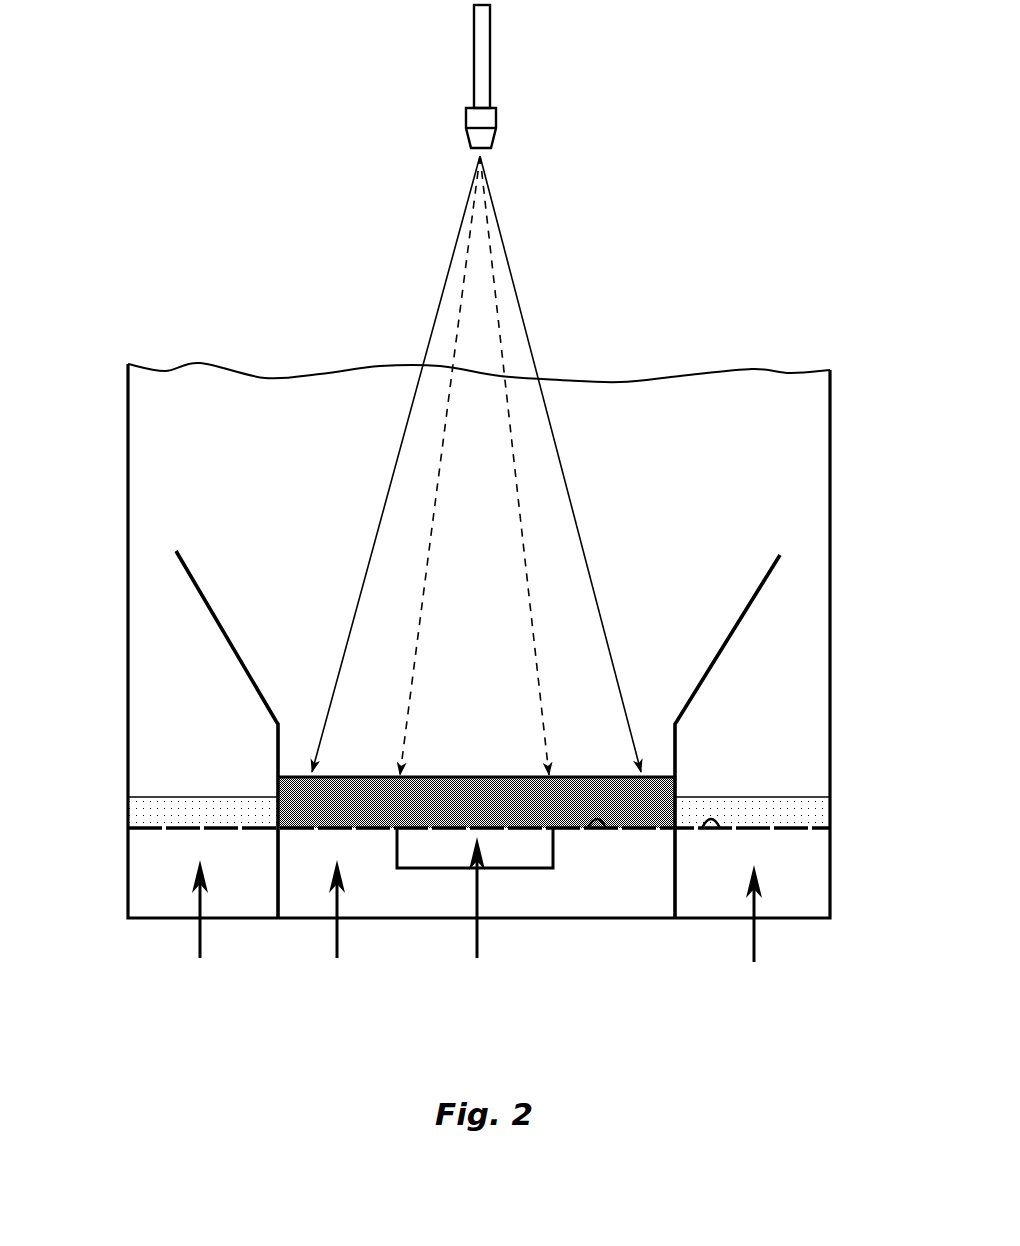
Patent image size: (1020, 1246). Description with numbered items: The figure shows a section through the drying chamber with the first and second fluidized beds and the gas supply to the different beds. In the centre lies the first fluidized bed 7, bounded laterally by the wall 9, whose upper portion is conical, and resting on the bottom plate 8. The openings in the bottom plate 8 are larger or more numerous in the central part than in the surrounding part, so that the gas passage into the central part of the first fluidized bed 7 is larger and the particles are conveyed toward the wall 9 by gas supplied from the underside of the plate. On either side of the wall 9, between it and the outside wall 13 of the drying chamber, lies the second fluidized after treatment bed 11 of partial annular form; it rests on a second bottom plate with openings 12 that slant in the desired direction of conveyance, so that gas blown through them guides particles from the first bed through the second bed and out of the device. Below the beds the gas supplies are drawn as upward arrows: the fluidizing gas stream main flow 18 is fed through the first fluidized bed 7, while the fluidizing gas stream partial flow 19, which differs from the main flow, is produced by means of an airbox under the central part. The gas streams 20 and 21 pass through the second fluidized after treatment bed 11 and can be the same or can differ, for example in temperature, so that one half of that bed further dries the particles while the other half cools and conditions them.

The first fluidized bed 7 is at (676, 788).
The bottom plate 8 is at (591, 828).
The wall 9 is at (278, 750).
The second fluidized after treatment bed 11 is at (826, 818).
The openings 12 is at (704, 828).
The outside wall 13 is at (127, 646).
The fluidizing gas stream main flow 18 is at (336, 925).
The fluidizing gas stream partial flow 19 is at (476, 925).
The gas stream 20 is at (754, 928).
The gas stream 21 is at (199, 925).